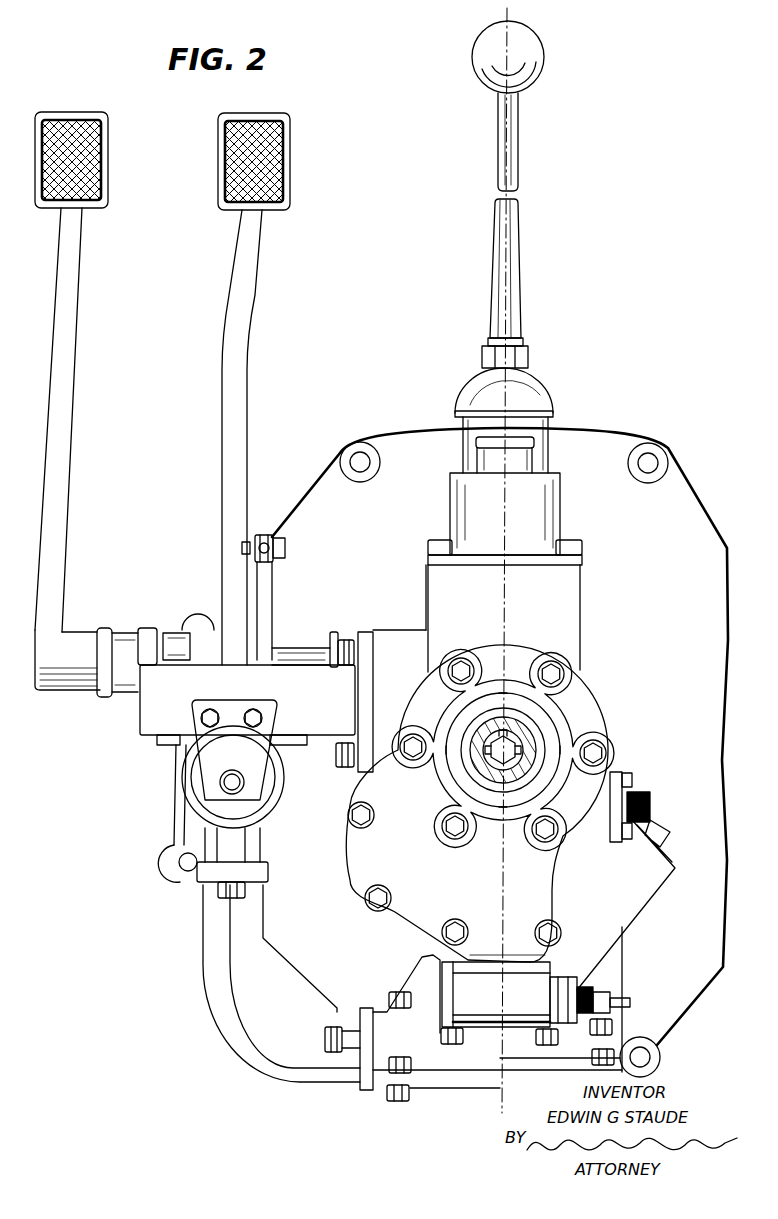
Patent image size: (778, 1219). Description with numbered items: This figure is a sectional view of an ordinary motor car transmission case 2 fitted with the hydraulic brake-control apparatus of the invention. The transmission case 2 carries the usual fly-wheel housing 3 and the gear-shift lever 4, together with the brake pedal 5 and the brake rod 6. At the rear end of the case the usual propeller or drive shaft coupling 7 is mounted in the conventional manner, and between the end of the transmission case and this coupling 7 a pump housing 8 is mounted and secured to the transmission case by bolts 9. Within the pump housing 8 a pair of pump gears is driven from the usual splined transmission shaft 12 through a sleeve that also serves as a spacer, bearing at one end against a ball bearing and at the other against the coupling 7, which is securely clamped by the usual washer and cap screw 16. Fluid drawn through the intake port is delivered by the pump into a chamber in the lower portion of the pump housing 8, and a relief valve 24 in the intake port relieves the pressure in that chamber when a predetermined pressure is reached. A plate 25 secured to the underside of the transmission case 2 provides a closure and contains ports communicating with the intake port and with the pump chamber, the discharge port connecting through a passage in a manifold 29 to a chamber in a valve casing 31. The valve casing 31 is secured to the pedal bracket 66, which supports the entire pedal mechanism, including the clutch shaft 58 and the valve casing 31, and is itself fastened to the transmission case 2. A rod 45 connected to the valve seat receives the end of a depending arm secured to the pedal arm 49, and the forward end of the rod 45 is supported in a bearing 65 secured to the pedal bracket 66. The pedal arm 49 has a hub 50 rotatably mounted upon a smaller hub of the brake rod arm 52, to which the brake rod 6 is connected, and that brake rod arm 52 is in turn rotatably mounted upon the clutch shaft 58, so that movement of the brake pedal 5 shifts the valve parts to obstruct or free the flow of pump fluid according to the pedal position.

The transmission case 2 is at (568, 641).
The fly-wheel housing 3 is at (610, 456).
The gear-shift lever 4 is at (519, 255).
The brake pedal 5 is at (281, 167).
The brake rod 6 is at (286, 545).
The propeller shaft coupling 7 is at (480, 740).
The pump housing 8 is at (585, 708).
The bolts 9 is at (460, 669).
The splined transmission shaft 12 is at (456, 826).
The washer and cap screw 16 is at (510, 754).
The relief valve 24 is at (607, 993).
The plate 25 is at (435, 1053).
The manifold 29 is at (217, 938).
The valve casing 31 is at (182, 787).
The rod 45 is at (240, 781).
The pedal arm 49 is at (230, 427).
The hub 50 is at (222, 583).
The brake rod arm 52 is at (262, 593).
The clutch shaft 58 is at (305, 653).
The bearing 65 is at (234, 750).
The pedal bracket 66 is at (247, 705).